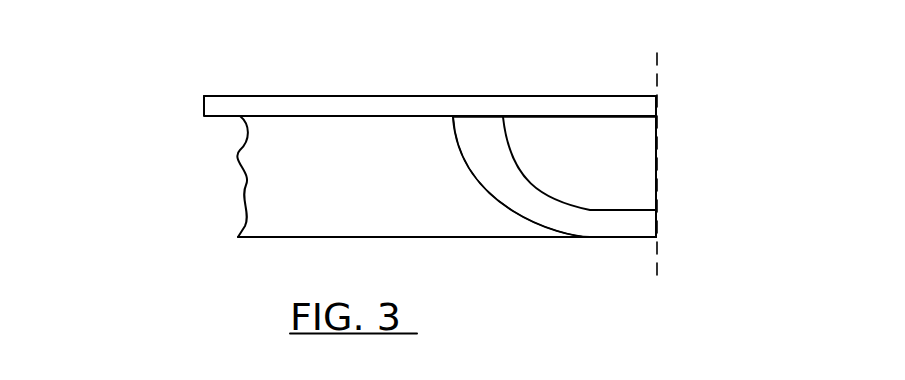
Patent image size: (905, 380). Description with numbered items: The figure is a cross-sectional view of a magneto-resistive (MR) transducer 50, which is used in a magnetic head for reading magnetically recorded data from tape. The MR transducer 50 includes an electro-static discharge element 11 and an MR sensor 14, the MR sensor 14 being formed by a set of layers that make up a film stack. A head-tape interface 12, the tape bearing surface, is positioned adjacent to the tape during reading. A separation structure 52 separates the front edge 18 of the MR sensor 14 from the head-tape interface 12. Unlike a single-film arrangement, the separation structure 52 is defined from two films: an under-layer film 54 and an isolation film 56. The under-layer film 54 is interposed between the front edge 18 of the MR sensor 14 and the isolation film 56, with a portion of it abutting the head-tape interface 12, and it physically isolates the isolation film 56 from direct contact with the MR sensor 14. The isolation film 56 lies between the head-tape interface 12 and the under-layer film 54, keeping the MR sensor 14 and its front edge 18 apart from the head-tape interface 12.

The MR transducer 50 is at (160, 163).
The electro-static discharge element 11 is at (312, 108).
The MR sensor 14 is at (368, 200).
The separation structure 52 is at (657, 88).
The front edge 18 is at (517, 220).
The isolation film 56 is at (607, 168).
The under-layer film 54 is at (619, 227).
The head-tape interface 12 is at (659, 73).